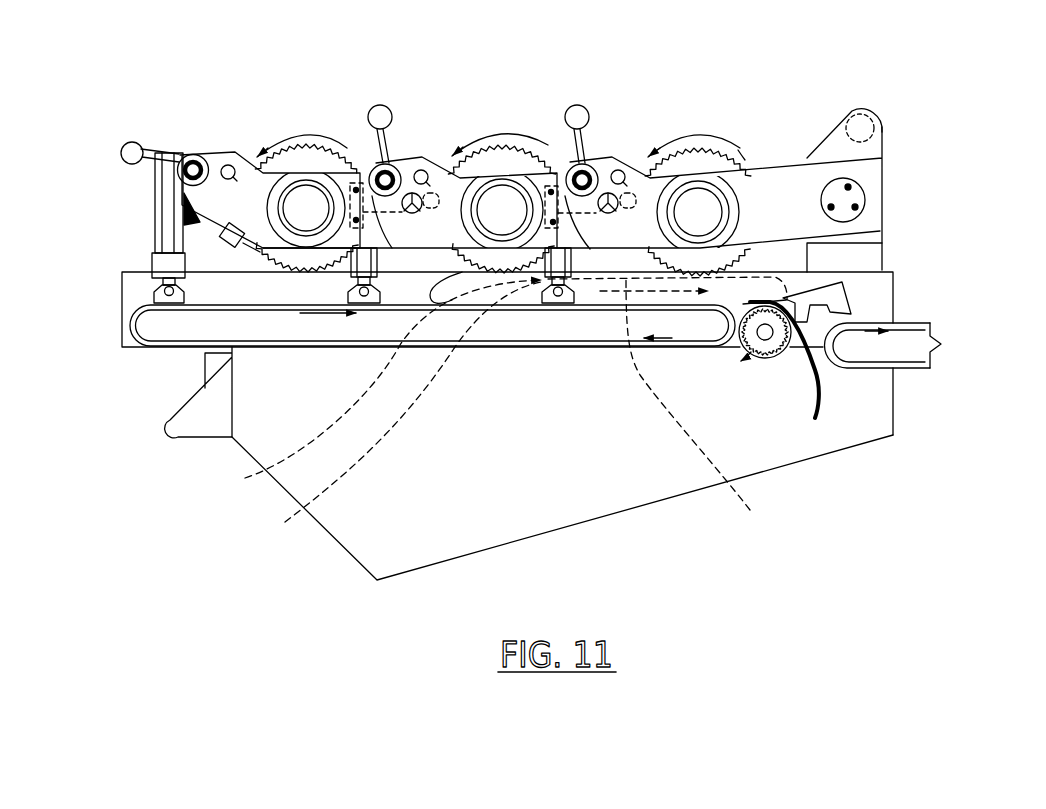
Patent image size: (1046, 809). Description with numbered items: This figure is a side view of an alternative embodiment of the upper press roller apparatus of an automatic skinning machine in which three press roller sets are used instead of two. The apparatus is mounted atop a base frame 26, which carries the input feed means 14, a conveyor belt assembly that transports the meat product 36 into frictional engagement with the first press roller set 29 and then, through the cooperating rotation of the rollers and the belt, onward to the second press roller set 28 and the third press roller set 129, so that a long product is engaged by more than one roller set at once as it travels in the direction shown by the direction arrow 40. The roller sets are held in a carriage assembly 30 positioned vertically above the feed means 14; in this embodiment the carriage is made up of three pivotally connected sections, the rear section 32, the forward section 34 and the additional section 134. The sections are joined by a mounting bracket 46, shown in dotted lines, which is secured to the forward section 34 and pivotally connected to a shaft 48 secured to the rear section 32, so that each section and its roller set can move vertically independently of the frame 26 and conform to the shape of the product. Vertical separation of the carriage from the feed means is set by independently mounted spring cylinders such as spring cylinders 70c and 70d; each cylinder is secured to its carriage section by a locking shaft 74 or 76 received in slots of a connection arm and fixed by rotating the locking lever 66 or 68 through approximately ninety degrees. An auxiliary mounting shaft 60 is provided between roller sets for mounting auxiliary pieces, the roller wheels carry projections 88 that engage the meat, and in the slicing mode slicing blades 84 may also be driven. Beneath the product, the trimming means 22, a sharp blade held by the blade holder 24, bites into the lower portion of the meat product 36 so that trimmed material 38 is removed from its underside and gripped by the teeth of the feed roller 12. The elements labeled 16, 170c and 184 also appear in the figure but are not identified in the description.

The feed roller 12 is at (760, 350).
The input feed means 14 is at (152, 320).
The discharge conveyor 16 is at (908, 368).
The trimming means 22 is at (758, 301).
The blade holder 24 is at (866, 302).
The base frame 26 is at (573, 534).
The second press roller set 28 is at (707, 125).
The first press roller set 29 is at (504, 127).
The carriage 30 is at (774, 158).
The carriage rear section 32 is at (801, 157).
The carriage forward section 34 is at (417, 233).
The meat product 36 is at (499, 383).
The trimmed material 38 is at (820, 392).
The direction arrow 40 is at (686, 405).
The mounting bracket 46 is at (548, 186).
The shaft 48 is at (618, 169).
The auxiliary mounting shaft 60 is at (646, 152).
The locking lever 66 is at (375, 103).
The locking lever 68 is at (571, 103).
The spring cylinder 70c is at (354, 306).
The spring cylinder 70d is at (392, 411).
The locking shaft 74 is at (396, 165).
The locking shaft 76 is at (584, 164).
The slicing blades 84 is at (462, 152).
The projections 88 is at (745, 158).
The third press roller set 129 is at (309, 127).
The carriage section 134 is at (204, 223).
The actuator lever 170c is at (152, 191).
The drive gear 184 is at (288, 160).